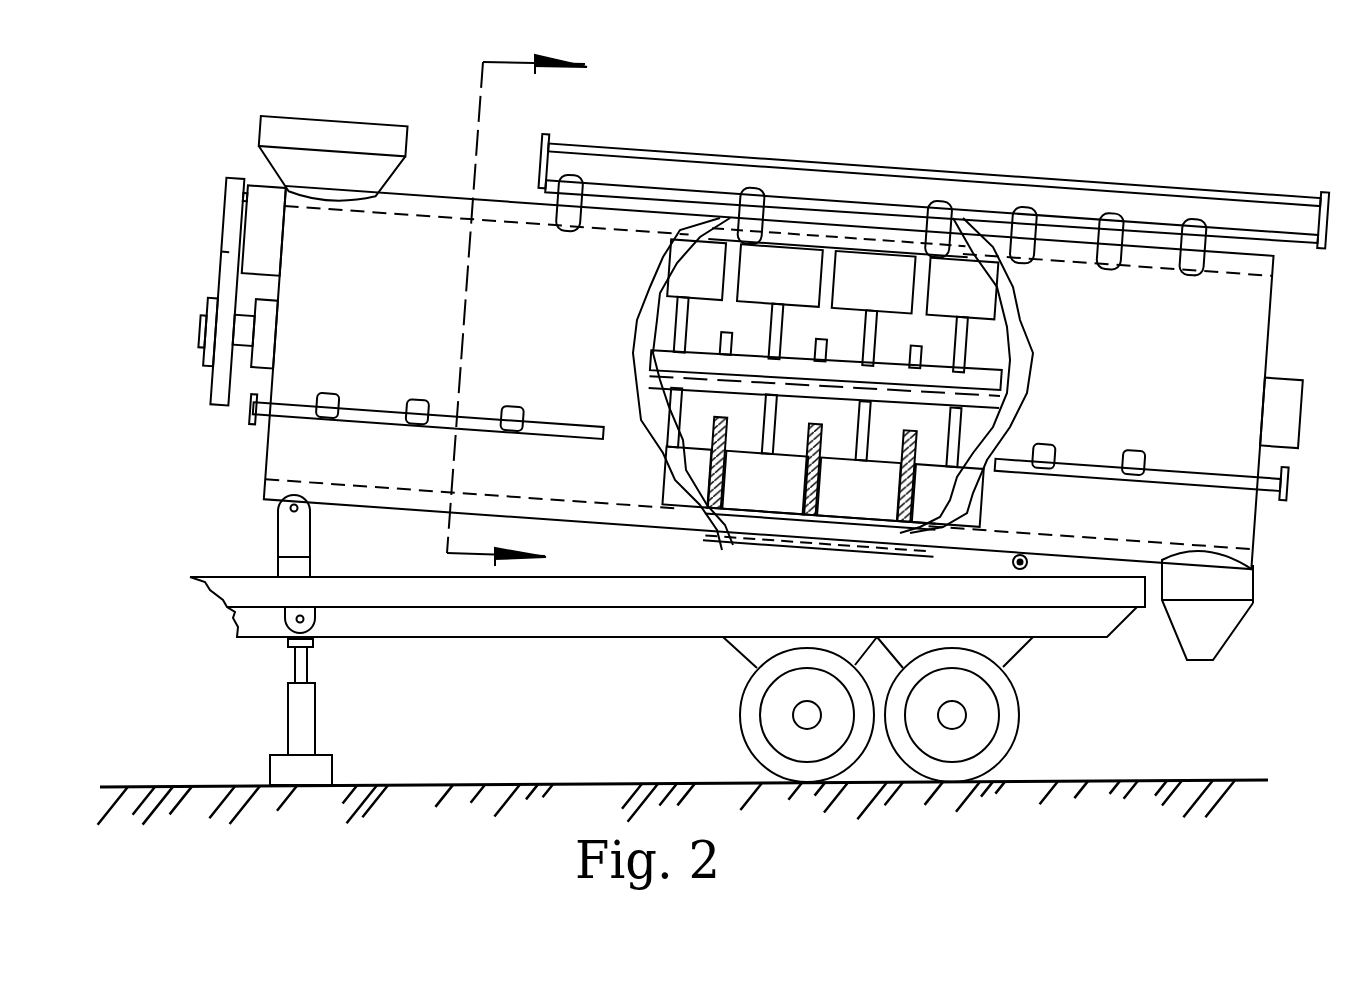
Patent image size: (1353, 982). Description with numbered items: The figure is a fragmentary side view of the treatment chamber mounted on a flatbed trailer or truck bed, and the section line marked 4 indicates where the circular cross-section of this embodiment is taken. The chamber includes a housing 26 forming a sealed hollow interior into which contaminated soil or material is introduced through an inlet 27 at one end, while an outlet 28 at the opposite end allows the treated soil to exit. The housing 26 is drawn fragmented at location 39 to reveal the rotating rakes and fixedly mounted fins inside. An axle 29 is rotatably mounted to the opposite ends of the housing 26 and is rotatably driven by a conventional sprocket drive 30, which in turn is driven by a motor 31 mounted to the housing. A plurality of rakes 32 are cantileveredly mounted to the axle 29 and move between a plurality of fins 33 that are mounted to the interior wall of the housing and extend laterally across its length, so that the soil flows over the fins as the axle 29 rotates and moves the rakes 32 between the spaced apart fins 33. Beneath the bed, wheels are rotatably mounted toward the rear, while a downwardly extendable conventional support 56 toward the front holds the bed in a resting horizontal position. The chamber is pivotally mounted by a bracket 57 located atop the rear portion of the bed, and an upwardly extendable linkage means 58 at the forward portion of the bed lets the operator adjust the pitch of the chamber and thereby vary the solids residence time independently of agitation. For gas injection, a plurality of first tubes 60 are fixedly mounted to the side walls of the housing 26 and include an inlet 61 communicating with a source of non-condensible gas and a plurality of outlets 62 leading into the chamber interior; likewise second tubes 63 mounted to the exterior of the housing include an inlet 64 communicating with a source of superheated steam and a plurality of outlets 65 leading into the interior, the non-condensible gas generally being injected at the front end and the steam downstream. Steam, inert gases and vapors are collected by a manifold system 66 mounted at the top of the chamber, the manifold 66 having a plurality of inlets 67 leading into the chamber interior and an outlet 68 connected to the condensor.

The housing 26 is at (417, 186).
The inlet 27 is at (290, 112).
The outlet 28 is at (1183, 655).
The axle 29 is at (668, 353).
The sprocket drive 30 is at (223, 292).
The motor 31 is at (258, 237).
The rakes 32 is at (752, 262).
The fins 33 is at (725, 428).
The fragmented location 39 is at (665, 302).
The support 56 is at (287, 690).
The bracket 57 is at (1016, 572).
The linkage means 58 is at (278, 530).
The first tubes 60 is at (363, 410).
The inlet 61 is at (254, 428).
The outlets 62 is at (415, 402).
The second tubes 63 is at (1175, 470).
The inlet 64 is at (1285, 490).
The outlets 65 is at (1050, 450).
The manifold system 66 is at (893, 170).
The inlets 67 is at (760, 192).
The outlet 68 is at (1325, 190).
The section line 4- 4 is at (525, 312).